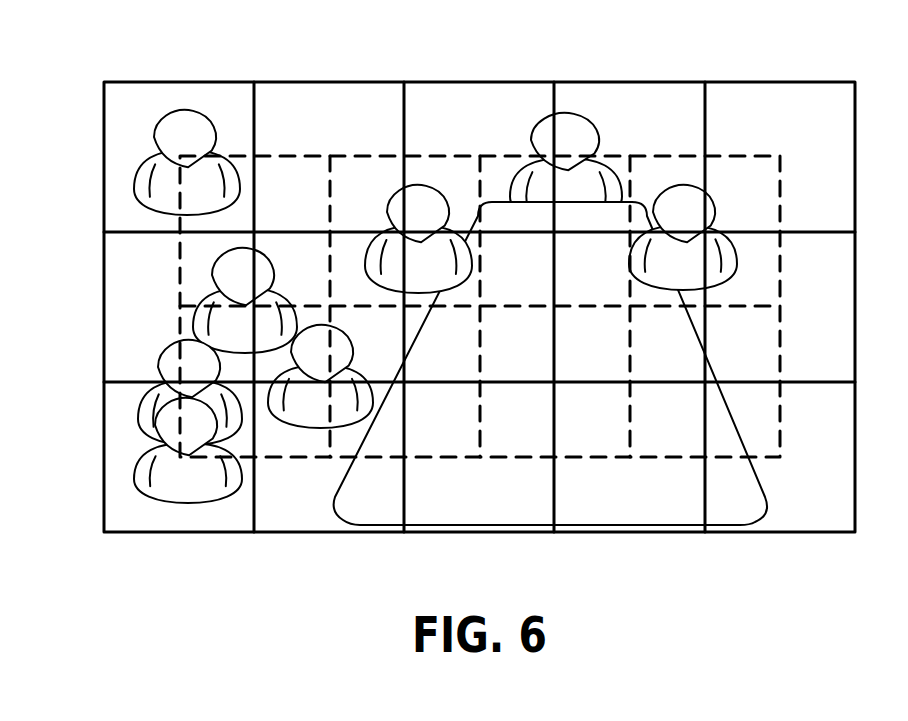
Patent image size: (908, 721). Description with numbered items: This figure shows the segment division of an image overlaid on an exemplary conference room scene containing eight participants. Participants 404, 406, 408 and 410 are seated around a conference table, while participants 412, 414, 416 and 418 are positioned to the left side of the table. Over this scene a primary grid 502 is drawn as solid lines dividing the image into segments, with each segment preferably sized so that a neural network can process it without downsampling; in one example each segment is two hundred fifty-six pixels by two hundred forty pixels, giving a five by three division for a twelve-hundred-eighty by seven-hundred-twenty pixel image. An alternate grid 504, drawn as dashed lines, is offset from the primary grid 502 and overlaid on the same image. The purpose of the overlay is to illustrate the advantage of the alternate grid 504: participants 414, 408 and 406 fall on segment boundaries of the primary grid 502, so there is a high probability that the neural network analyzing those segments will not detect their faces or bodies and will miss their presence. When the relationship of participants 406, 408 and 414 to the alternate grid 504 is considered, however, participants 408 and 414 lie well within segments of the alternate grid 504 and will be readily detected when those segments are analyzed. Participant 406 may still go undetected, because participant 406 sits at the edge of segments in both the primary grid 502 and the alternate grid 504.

The primary grid 502 is at (820, 80).
The alternate grid 504 is at (767, 460).
The participant 404 is at (708, 193).
The participant 406 is at (584, 117).
The participant 408 is at (402, 188).
The participant 410 is at (348, 331).
The participant 412 is at (204, 111).
The participant 414 is at (220, 259).
The participant 416 is at (174, 346).
The participant 418 is at (236, 491).